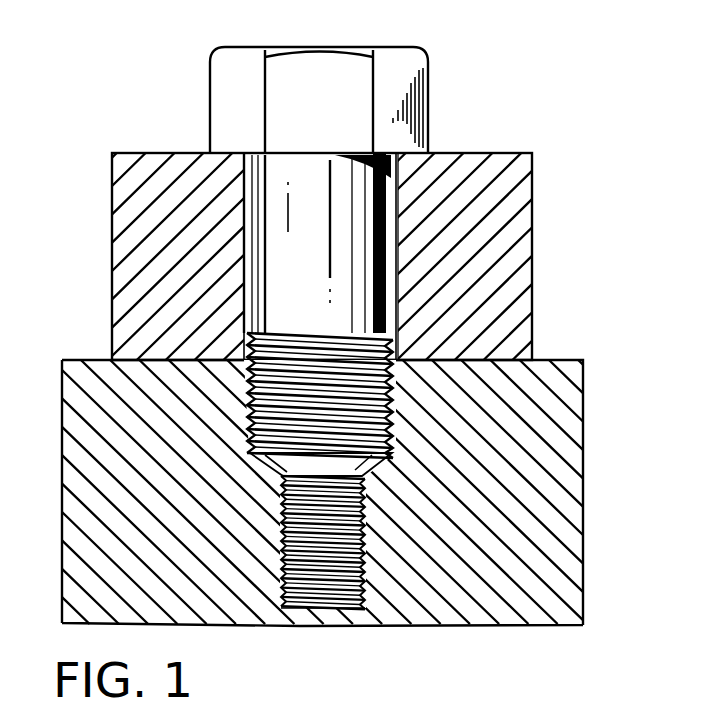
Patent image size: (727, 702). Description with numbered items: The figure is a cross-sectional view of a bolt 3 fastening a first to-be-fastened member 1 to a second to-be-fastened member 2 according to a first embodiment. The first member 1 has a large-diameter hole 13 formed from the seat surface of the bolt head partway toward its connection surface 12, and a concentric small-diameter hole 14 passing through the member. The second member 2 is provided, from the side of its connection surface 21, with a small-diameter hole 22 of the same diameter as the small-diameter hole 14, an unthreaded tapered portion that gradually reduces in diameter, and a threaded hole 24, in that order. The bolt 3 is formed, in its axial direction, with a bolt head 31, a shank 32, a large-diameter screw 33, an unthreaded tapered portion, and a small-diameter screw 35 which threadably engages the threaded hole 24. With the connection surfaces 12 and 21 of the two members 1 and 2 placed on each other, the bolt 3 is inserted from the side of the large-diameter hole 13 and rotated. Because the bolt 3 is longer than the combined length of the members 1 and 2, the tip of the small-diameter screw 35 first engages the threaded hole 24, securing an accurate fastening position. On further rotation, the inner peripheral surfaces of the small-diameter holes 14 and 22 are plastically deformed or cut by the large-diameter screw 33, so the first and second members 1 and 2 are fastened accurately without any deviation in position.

The to-be-fastened member 1 is at (533, 183).
The to-be-fastened member 2 is at (583, 410).
The bolt 3 is at (297, 338).
The connection surface 12 is at (115, 363).
The large-diameter hole 13 is at (245, 225).
The small-diameter hole 14 is at (392, 350).
The connection surface 21 is at (567, 362).
The small-diameter hole 22 is at (256, 416).
The threaded hole 24 is at (303, 565).
The bolt head 31 is at (372, 48).
The shank 32 is at (373, 252).
The large-diameter screw 33 is at (250, 392).
The small-diameter screw 35 is at (347, 577).